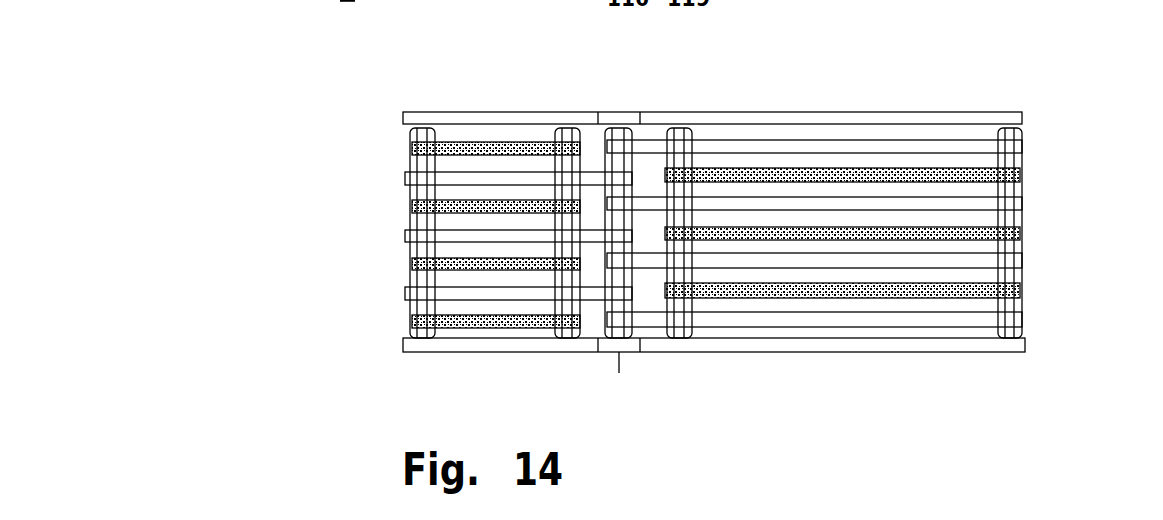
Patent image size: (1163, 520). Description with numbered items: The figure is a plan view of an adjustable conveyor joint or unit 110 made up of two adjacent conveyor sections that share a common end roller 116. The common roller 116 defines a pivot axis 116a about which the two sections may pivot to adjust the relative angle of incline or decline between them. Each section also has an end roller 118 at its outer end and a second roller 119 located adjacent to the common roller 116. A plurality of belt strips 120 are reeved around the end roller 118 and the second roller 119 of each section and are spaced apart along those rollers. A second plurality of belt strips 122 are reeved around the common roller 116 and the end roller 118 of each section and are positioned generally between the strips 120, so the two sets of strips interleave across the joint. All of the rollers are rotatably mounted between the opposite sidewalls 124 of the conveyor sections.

The adjustable conveyor unit 110 is at (794, 86).
The common end roller 116 is at (628, 126).
The pivot axis 116a is at (620, 112).
The end roller 118 is at (422, 128).
The second roller 119 is at (568, 128).
The belt strips 120 is at (500, 141).
The belt strips 122 is at (870, 139).
The sidewalls 124 is at (460, 112).